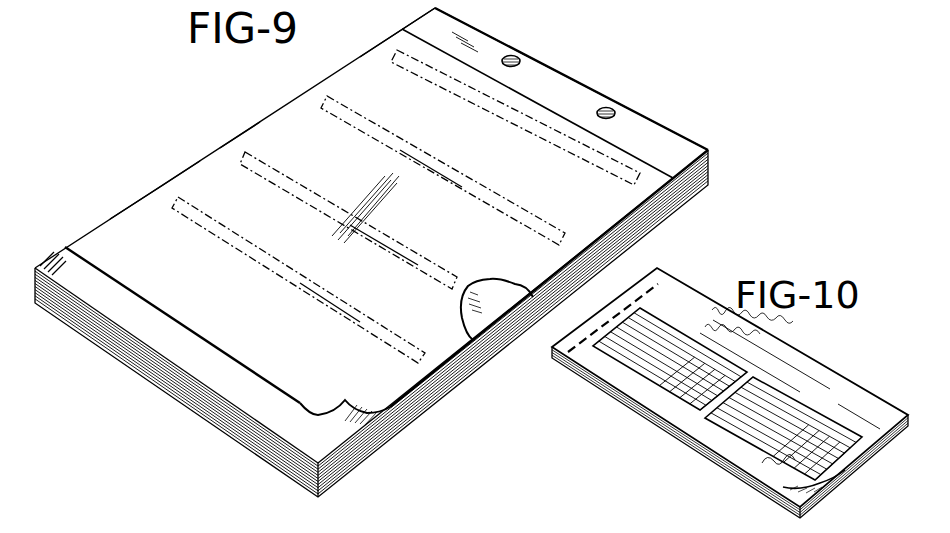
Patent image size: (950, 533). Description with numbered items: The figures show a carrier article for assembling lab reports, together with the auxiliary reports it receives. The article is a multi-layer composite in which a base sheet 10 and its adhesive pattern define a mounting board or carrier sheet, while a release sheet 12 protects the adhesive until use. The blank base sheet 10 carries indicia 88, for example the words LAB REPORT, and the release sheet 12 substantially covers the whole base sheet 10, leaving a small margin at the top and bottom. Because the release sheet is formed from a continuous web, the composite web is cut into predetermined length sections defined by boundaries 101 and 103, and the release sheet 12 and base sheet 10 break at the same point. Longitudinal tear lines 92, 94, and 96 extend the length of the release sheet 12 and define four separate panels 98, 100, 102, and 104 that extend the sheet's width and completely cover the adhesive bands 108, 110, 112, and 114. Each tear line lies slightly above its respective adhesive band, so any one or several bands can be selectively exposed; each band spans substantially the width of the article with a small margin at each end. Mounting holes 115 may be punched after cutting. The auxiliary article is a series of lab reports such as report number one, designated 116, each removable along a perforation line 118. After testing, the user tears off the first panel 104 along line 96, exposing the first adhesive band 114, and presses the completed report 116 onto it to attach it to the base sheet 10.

In FIG. 9, the base sheet 10 is at (648, 136).
In FIG. 9, the release sheet 12 is at (206, 349).
In FIG. 9, the indicia 88 is at (560, 86).
In FIG. 9, the longitudinal tear line 92 is at (370, 319).
In FIG. 9, the longitudinal tear line 94 is at (437, 252).
In FIG. 9, the longitudinal tear line 96 is at (556, 223).
In FIG. 9, the release sheet panel 98 is at (140, 212).
In FIG. 9, the release sheet panel 100 is at (228, 155).
In FIG. 9, the boundary 101 is at (173, 170).
In FIG. 9, the release sheet panel 102 is at (287, 108).
In FIG. 9, the boundary 103 is at (513, 332).
In FIG. 9, the first release sheet panel 104 is at (360, 73).
In FIG. 9, the adhesive band 108 is at (355, 323).
In FIG. 9, the adhesive band 110 is at (418, 248).
In FIG. 9, the adhesive band 112 is at (462, 191).
In FIG. 9, the first adhesive band 114 is at (553, 140).
In FIG. 10, the first adhesive band 114 is at (819, 478).
In FIG. 9, the mounting holes 115 is at (513, 52).
In FIG. 10, the lab report article 116 is at (722, 467).
In FIG. 10, the perforation line 118 is at (684, 255).